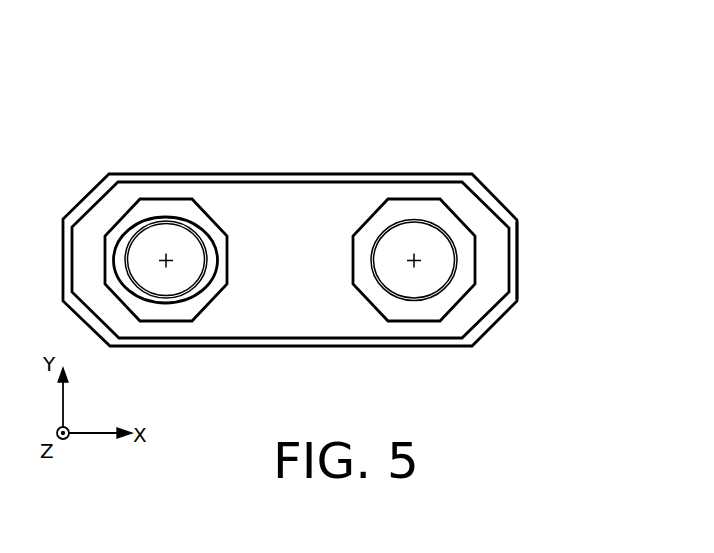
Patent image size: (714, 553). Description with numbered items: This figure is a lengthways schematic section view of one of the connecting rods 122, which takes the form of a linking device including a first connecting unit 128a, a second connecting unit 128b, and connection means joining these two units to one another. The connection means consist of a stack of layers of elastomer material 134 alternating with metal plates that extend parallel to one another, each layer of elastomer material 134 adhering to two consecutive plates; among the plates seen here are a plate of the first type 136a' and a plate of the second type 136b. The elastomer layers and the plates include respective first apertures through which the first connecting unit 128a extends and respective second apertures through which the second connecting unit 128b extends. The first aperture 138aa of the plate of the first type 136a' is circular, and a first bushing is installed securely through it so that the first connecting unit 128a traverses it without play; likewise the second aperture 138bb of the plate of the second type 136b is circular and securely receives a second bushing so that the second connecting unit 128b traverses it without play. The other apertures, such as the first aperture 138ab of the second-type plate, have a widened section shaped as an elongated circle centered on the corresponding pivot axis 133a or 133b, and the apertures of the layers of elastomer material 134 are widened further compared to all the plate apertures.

The connecting rod 122 is at (473, 99).
The layer of elastomer material 134 is at (488, 317).
The plate of the second type 136b is at (518, 267).
The plate of the first type 136a' is at (214, 218).
The first connecting unit 128a is at (178, 274).
The second connecting unit 128b is at (414, 284).
The pivot axis 133a is at (175, 253).
The pivot axis 133b is at (411, 256).
The first aperture 138aa is at (127, 254).
The first aperture 138ab is at (130, 281).
The second aperture 138bb is at (456, 258).